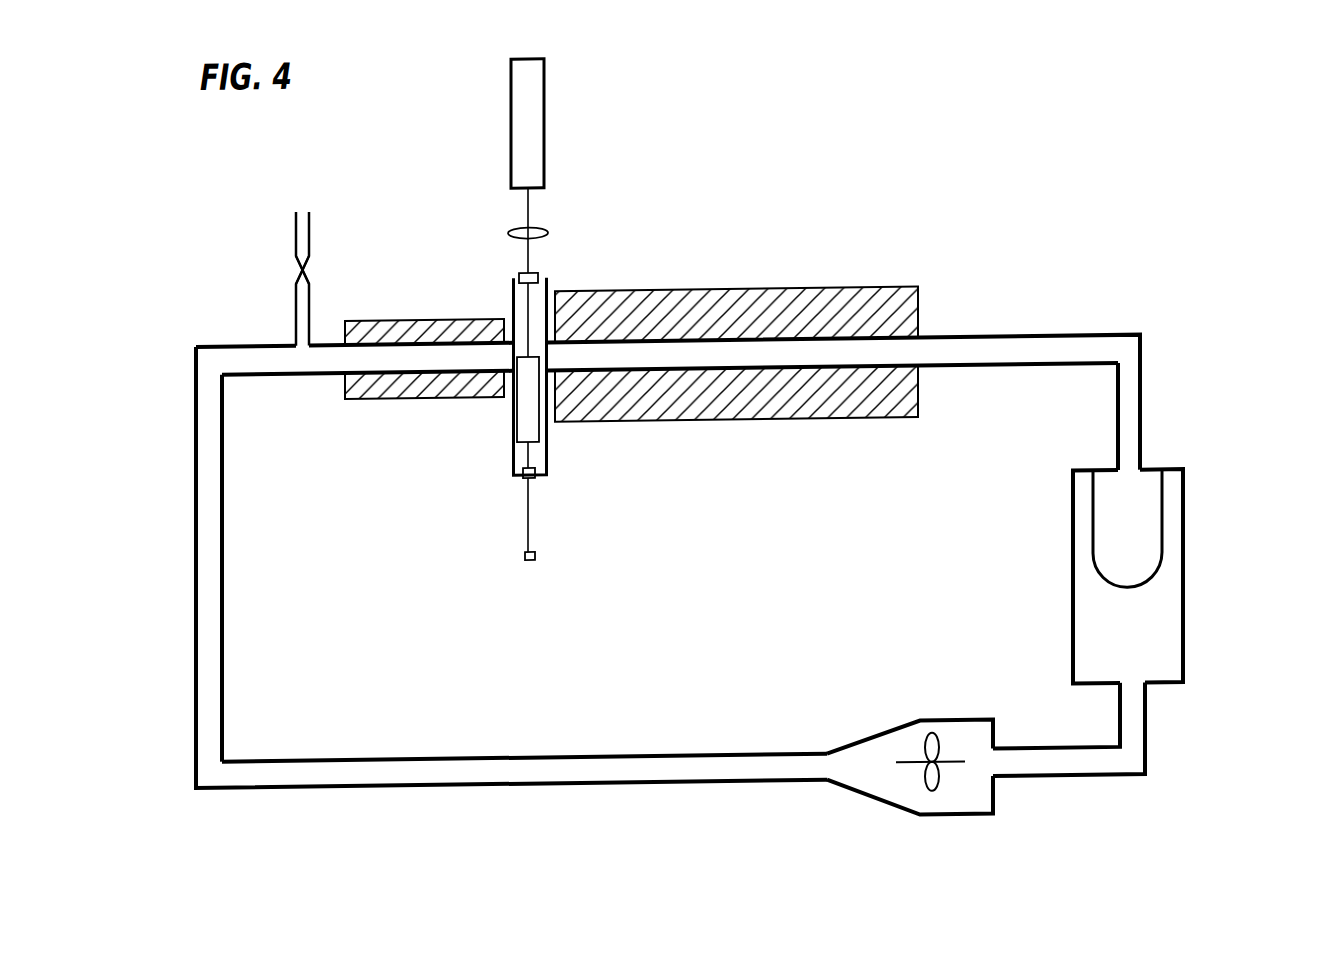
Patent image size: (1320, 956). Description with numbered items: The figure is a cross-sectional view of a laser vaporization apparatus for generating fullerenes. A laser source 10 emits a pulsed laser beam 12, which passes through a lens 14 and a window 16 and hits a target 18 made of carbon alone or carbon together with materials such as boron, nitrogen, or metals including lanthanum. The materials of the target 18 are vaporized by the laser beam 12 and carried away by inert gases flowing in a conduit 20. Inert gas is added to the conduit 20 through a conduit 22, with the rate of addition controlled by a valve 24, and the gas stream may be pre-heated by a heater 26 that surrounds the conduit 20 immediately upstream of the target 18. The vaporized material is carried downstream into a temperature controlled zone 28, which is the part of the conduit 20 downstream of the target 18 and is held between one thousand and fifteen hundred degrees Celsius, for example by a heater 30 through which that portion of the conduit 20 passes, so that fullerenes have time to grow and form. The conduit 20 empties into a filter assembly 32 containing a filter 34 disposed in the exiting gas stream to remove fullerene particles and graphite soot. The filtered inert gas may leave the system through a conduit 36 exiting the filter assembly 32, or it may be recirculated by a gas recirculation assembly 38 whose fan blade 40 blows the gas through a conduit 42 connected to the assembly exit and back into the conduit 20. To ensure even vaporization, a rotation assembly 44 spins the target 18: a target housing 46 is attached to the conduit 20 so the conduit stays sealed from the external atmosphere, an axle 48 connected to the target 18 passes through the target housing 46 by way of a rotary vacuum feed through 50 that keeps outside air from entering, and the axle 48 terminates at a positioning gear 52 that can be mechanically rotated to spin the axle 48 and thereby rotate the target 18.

The laser source 10 is at (544, 88).
The pulsed laser beam 12 is at (528, 214).
The lens 14 is at (508, 237).
The window 16 is at (540, 270).
The target 18 is at (517, 432).
The conduit 20 is at (275, 378).
The conduit 22 is at (296, 314).
The valve 24 is at (311, 272).
The heater 26 is at (352, 402).
The temperature controlled zone 28 is at (741, 370).
The heater 30 is at (813, 297).
The filter assembly 32 is at (1184, 618).
The filter 34 is at (1162, 531).
The conduit 36 is at (1148, 770).
The gas recirculation assembly 38 is at (945, 824).
The fan blade 40 is at (933, 743).
The conduit 42 is at (503, 762).
The rotation assembly 44 is at (468, 472).
The target housing 46 is at (549, 472).
The axle 48 is at (530, 514).
The rotary vacuum feed through 50 is at (522, 490).
The positioning gear 52 is at (536, 565).